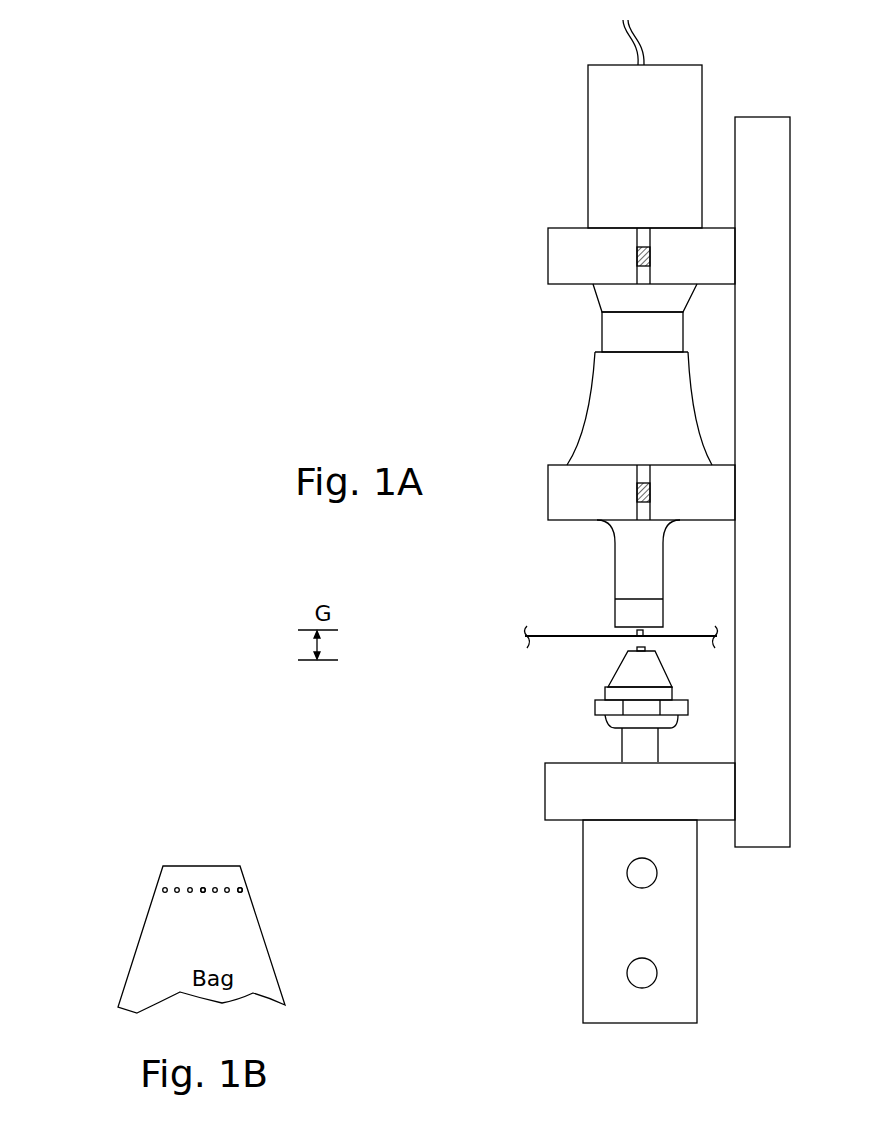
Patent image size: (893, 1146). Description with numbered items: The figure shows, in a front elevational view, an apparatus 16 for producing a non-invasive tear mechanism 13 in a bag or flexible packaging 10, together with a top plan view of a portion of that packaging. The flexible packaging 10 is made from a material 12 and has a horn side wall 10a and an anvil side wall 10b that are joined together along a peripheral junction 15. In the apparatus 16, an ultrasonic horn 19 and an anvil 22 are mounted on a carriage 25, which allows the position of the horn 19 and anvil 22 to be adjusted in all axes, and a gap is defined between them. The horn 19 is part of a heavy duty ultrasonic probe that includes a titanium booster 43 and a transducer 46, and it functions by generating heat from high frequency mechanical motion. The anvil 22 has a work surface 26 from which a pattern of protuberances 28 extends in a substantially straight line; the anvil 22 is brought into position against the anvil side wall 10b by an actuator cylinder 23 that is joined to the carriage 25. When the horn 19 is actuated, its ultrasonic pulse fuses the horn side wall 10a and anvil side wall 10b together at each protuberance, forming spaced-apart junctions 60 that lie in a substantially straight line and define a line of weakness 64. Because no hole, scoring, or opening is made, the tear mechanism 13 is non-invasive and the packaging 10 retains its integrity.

In FIG. 1A, the flexible packaging 10 is at (548, 636).
In FIG. 1B, the flexible packaging 10 is at (247, 953).
In FIG. 1A, the horn side wall 10a is at (560, 633).
In FIG. 1A, the anvil side wall 10b is at (557, 645).
In FIG. 1A, the material 12 is at (677, 635).
In FIG. 1B, the material 12 is at (260, 957).
In FIG. 1B, the non-invasive tear mechanism 13 is at (177, 892).
In FIG. 1B, the peripheral junction 15 is at (182, 865).
In FIG. 1A, the apparatus 16 is at (453, 302).
In FIG. 1A, the ultrasonic horn 19 is at (637, 555).
In FIG. 1A, the anvil 22 is at (630, 673).
In FIG. 1A, the actuator cylinder 23 is at (603, 912).
In FIG. 1A, the carriage 25 is at (770, 555).
In FIG. 1A, the work surface 26 is at (650, 652).
In FIG. 1A, the pattern of protuberances 28 is at (645, 648).
In FIG. 1A, the titanium booster 43 is at (617, 392).
In FIG. 1A, the transducer 46 is at (612, 146).
In FIG. 1A, the junctions 60 is at (618, 636).
In FIG. 1B, the junctions 60 is at (200, 885).
In FIG. 1B, the line of weakness 64 is at (243, 882).